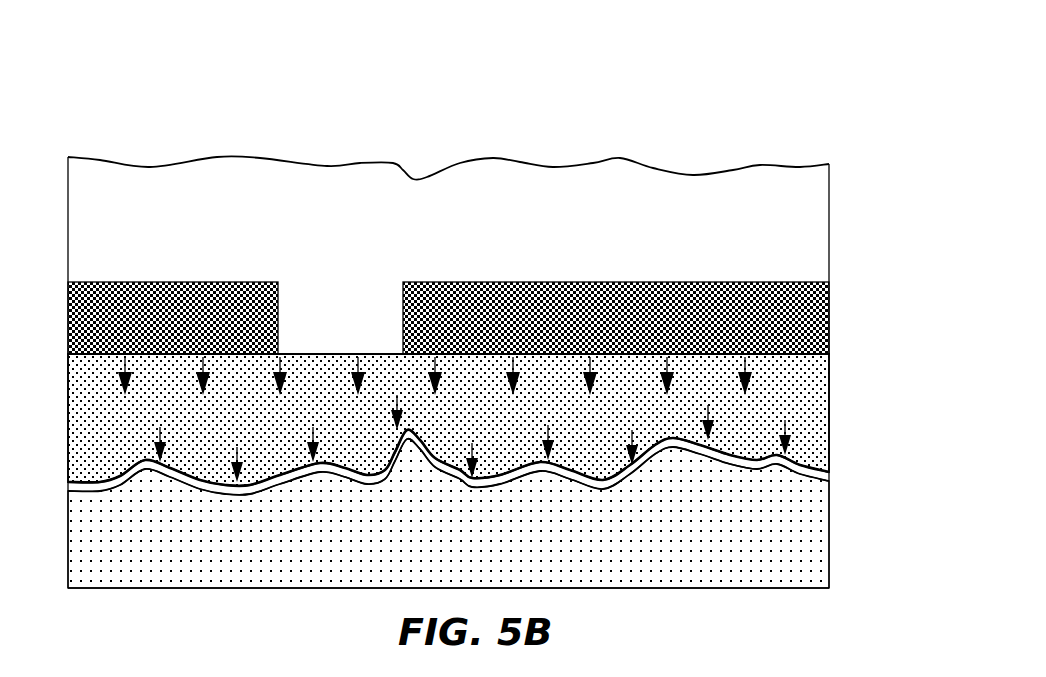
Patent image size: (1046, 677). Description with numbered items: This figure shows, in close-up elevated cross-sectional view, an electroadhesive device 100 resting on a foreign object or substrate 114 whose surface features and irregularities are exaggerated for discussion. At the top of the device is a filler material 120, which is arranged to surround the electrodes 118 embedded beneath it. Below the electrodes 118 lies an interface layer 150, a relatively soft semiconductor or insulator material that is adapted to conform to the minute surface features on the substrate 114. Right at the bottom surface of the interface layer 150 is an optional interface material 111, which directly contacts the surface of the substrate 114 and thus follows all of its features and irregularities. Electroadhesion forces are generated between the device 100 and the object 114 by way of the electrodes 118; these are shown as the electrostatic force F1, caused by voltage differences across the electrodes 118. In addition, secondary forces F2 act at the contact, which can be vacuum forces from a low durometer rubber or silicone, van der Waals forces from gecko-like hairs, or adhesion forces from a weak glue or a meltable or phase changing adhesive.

The electroadhesive device 100 is at (186, 116).
The filler material 120 is at (425, 240).
The electrodes 118 is at (193, 323).
The interface layer 150 is at (473, 421).
The foreign object or substrate 114 is at (456, 548).
The interface material 111 is at (775, 466).
The electrostatic force F1 is at (755, 358).
The secondary forces F2 is at (790, 426).